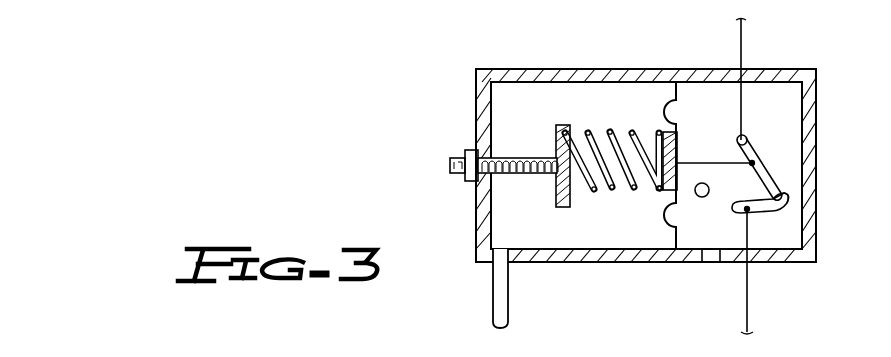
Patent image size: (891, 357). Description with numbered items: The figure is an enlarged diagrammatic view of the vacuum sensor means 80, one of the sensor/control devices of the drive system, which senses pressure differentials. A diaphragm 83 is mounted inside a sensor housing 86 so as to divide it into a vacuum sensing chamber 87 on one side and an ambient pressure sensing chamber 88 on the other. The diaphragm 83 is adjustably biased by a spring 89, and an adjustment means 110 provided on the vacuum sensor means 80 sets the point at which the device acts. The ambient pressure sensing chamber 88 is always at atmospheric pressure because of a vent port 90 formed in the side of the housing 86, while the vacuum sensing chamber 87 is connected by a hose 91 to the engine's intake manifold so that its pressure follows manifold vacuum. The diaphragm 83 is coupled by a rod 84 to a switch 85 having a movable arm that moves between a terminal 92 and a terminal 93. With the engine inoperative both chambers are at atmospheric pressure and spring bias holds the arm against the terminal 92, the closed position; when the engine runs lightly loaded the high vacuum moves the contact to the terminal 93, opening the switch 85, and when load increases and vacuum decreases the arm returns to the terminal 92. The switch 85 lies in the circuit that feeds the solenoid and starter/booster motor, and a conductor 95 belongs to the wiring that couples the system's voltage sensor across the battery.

The vacuum sensor means 80 is at (511, 66).
The diaphragm 83 is at (668, 226).
The rod 84 is at (698, 162).
The switch 85 is at (790, 201).
The sensor housing 86 is at (812, 246).
The vacuum sensing chamber 87 is at (616, 119).
The ambient pressure sensing chamber 88 is at (783, 127).
The spring 89 is at (597, 193).
The vent port 90 is at (712, 263).
The hose 91 is at (493, 290).
The terminal 92 is at (752, 209).
The terminal 93 is at (704, 197).
The conductor 95 is at (741, 57).
The adjustment means 110 is at (459, 157).